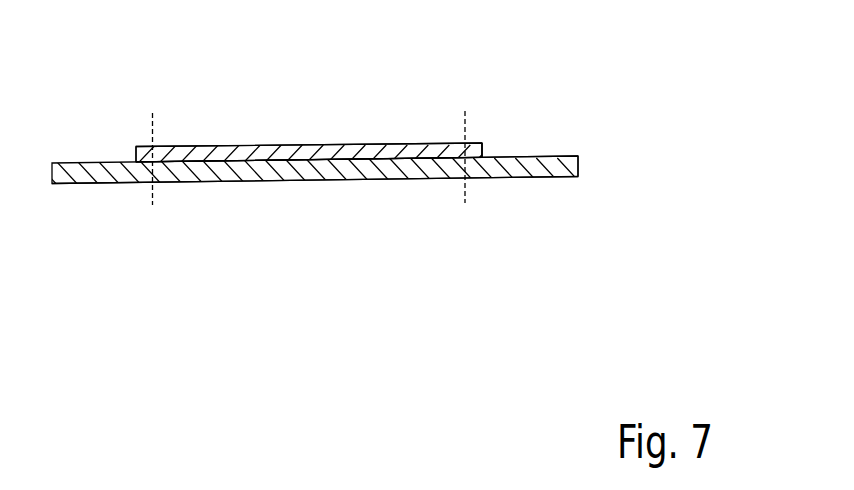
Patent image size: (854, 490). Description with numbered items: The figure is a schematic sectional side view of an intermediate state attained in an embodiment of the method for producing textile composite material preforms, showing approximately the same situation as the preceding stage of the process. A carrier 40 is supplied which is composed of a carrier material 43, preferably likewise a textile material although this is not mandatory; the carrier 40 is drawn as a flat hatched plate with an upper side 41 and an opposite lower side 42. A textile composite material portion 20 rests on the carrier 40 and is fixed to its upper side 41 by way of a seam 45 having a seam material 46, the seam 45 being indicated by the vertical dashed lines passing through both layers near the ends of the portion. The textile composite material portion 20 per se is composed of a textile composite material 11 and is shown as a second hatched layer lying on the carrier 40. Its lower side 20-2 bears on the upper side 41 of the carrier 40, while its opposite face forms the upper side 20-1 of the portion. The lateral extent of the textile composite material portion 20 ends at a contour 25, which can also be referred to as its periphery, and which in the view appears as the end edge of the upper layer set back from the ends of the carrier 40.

The carrier 40 is at (88, 192).
The upper side of the carrier 41 is at (543, 153).
The bottom surface of carrier 42 is at (553, 178).
The carrier material 43 is at (578, 164).
The textile composite material portion 20 is at (336, 134).
The upper side of the textile composite material portion 20-1 is at (221, 146).
The lower side of the textile composite material portion 20-2 is at (330, 166).
The textile composite material 11 is at (296, 156).
The contour 25 is at (485, 149).
The seam 45 is at (158, 118).
The seam material 46 is at (148, 138).